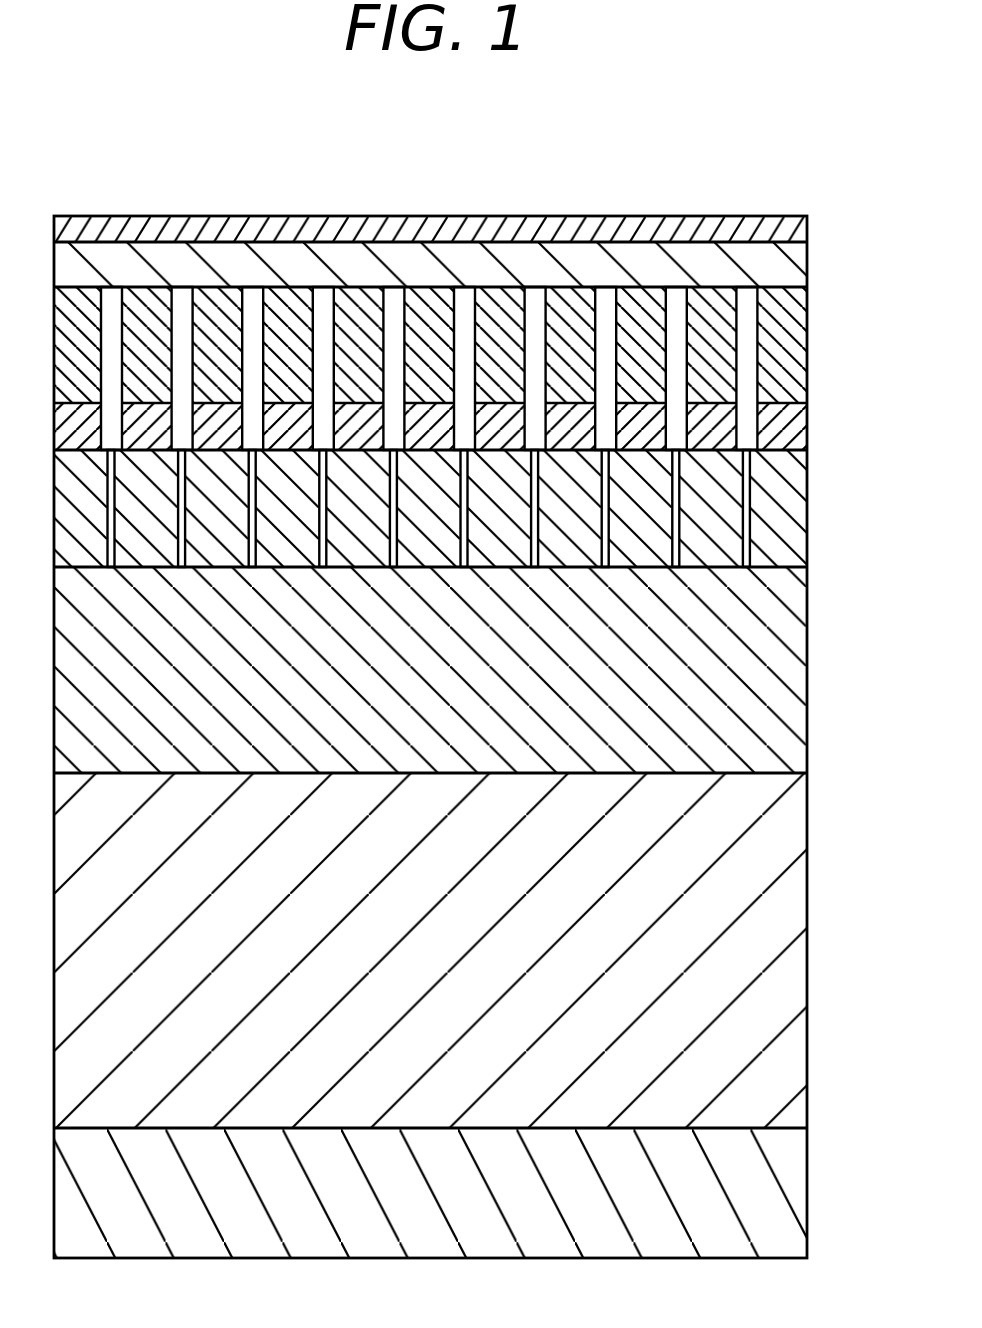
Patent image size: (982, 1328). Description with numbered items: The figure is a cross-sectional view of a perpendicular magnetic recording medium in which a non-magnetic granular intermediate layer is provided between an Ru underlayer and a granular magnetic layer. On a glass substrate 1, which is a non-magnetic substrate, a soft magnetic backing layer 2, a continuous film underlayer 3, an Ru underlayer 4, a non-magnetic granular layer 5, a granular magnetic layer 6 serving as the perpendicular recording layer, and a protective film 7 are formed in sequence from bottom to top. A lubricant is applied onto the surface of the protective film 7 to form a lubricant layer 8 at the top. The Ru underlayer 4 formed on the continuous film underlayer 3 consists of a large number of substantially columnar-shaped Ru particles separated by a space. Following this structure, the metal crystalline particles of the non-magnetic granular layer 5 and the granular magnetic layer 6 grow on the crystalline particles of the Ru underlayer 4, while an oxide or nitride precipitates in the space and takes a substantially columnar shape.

The glass substrate 1 is at (807, 1200).
The soft magnetic backing layer 2 is at (807, 943).
The continuous film underlayer 3 is at (807, 645).
The Ru underlayer 4 is at (807, 504).
The non-magnetic granular layer 5 is at (807, 420).
The granular magnetic layer 6 is at (807, 330).
The protective film 7 is at (807, 262).
The lubricant layer 8 is at (807, 226).